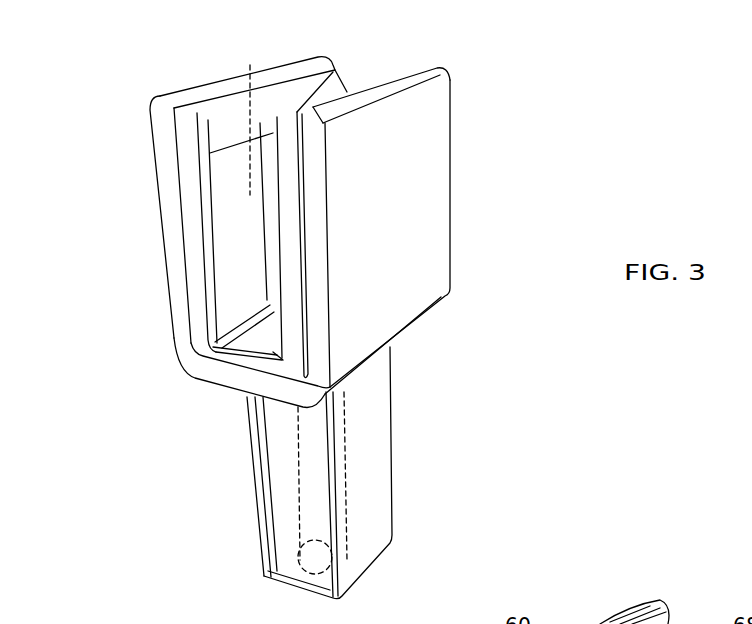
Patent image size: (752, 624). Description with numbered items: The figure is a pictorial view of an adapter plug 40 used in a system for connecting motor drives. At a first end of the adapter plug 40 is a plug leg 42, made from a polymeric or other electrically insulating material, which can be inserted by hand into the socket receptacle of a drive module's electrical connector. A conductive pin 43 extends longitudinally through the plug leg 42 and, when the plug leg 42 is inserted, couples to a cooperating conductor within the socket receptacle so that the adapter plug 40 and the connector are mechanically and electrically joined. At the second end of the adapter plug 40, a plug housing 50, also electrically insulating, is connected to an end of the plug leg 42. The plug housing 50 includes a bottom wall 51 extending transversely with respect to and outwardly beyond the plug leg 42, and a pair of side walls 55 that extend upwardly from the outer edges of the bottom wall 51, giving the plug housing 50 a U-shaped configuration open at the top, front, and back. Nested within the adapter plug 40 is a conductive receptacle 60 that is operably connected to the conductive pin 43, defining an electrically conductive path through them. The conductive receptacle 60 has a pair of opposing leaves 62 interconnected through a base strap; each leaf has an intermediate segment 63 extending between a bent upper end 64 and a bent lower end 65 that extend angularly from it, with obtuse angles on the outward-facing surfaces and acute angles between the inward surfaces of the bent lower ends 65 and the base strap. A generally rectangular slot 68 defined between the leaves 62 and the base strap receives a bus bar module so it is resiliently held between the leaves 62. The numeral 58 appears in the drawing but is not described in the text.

The adapter plug 40 is at (508, 236).
The plug leg 42 is at (376, 528).
The conductive pin 43 is at (343, 465).
The plug housing 50 is at (452, 278).
The bottom wall 51 is at (223, 373).
The side walls 55 is at (157, 182).
The tab 58 is at (621, 616).
The conductive receptacle 60 is at (415, 57).
The leaves 62 is at (215, 199).
The intermediate segment 63 is at (226, 240).
The bent upper end 64 is at (217, 123).
The bent lower end 65 is at (200, 352).
The slot 68 is at (250, 63).